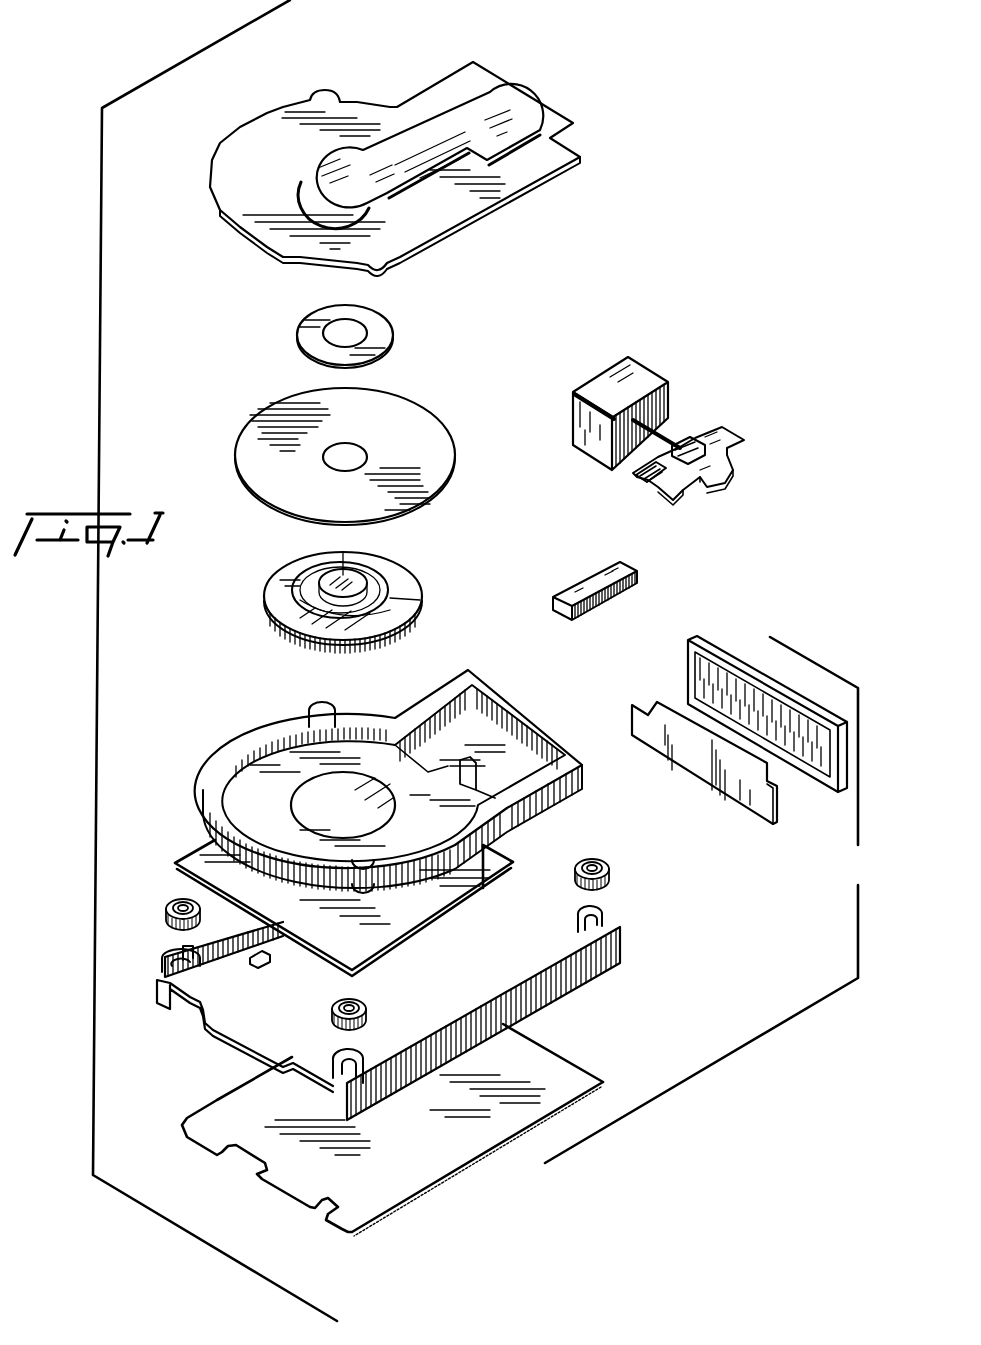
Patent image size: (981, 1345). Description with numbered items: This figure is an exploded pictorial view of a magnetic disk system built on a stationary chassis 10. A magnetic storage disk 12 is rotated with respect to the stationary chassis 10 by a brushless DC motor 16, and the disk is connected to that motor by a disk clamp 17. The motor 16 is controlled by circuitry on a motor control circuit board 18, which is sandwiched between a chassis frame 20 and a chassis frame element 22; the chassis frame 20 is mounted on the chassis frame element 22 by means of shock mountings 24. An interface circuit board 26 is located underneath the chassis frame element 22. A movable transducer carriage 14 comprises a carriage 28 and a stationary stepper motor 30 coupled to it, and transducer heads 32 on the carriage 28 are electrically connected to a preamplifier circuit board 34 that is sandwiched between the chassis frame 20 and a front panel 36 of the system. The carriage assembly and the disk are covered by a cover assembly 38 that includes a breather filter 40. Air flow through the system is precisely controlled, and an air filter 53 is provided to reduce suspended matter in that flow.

The stationary chassis 10 is at (480, 660).
The magnetic storage disk 12 is at (395, 443).
The movable transducer carriage 14 is at (675, 446).
The brushless DC motor 16 is at (393, 580).
The disk clamp 17 is at (373, 325).
The motor control circuit board 18 is at (213, 862).
The chassis frame 20 is at (215, 778).
The chassis frame element 22 is at (580, 975).
The shock mountings 24 is at (360, 1002).
The interface circuit board 26 is at (393, 1160).
The carriage 28 is at (680, 452).
The stationary stepper motor 30 is at (612, 378).
The transducer heads 32 is at (638, 477).
The preamplifier circuit board 34 is at (695, 755).
The front panel 36 is at (745, 668).
The cover assembly 38 is at (395, 163).
The breather filter 40 is at (343, 177).
The air filter 53 is at (608, 600).